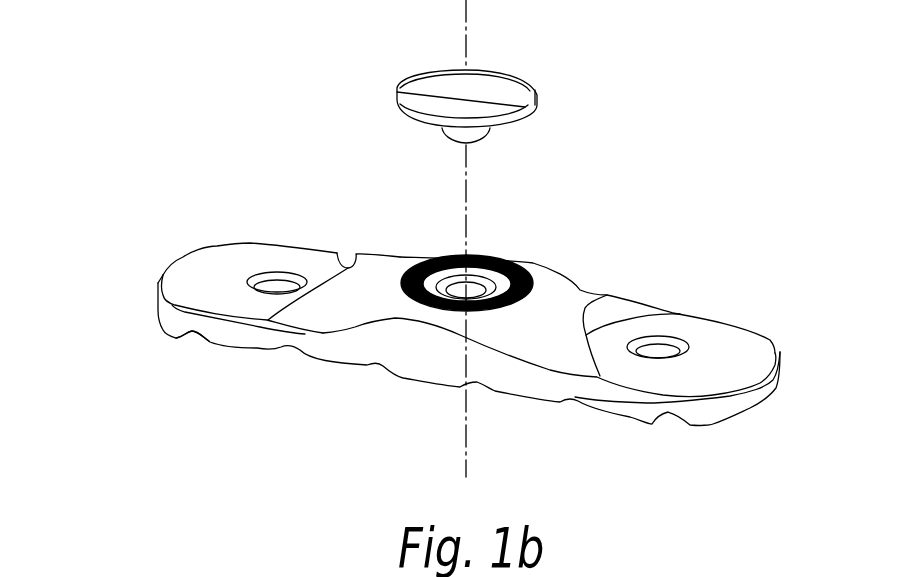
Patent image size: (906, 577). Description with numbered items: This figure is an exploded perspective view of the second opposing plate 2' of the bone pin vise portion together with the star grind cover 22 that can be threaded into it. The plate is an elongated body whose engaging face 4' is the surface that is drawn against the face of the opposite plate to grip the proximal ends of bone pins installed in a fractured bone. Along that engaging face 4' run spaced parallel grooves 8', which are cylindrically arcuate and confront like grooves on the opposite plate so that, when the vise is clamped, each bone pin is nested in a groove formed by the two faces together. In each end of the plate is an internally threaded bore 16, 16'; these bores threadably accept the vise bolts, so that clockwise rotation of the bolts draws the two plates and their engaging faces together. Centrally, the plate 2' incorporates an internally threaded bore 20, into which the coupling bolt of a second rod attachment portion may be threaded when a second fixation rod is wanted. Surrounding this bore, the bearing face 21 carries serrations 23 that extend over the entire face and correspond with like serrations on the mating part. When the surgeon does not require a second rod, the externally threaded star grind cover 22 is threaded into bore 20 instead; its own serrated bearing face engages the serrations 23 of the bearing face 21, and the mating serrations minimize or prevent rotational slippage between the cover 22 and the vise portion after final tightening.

The second opposing plate 2' is at (435, 314).
The engaging face 4' is at (478, 396).
The spaced parallel grooves 8' is at (184, 383).
The threaded bore 16' is at (268, 223).
The threaded bore 16 is at (670, 295).
The internally threaded bore 20 is at (476, 288).
The bearing face 21 is at (534, 264).
The star grind cover 22 is at (397, 92).
The serrations 23 is at (408, 260).